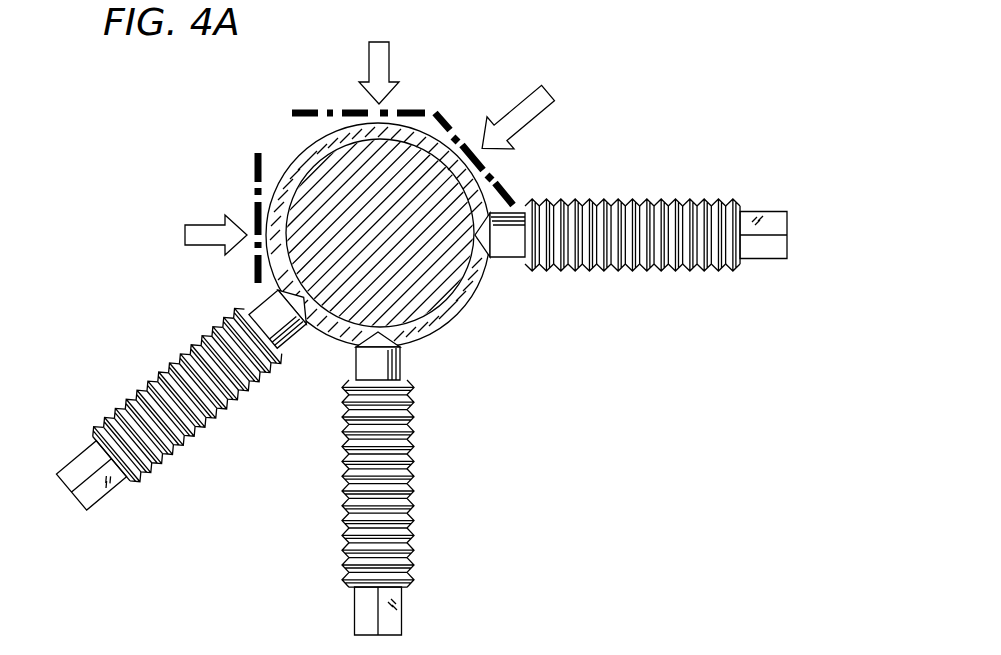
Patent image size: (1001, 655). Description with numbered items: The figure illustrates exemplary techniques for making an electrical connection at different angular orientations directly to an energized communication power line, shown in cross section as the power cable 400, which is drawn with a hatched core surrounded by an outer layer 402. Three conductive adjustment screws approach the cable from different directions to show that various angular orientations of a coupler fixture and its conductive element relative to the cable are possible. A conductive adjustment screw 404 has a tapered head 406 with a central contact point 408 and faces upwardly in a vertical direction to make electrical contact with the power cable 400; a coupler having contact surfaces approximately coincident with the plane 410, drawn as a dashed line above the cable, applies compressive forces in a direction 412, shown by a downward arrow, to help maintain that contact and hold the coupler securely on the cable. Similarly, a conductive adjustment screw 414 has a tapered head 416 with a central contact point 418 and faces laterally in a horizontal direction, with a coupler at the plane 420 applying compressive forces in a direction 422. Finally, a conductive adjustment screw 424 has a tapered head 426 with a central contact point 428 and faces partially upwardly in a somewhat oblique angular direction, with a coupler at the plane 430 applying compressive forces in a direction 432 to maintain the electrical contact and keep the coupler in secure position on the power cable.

The power cable 400 is at (327, 178).
The outer shell layer 402 is at (442, 328).
The conductive adjustment screw 404 is at (418, 510).
The tapered head 406 is at (368, 358).
The central contact point 408 is at (382, 333).
The plane 410 is at (338, 108).
The direction 412 is at (388, 62).
The conductive adjustment screw 414 is at (707, 209).
The tapered head 416 is at (500, 258).
The central contact point 418 is at (475, 234).
The plane 420 is at (255, 175).
The direction 422 is at (185, 233).
The conductive adjustment screw 424 is at (122, 403).
The tapered head 426 is at (285, 298).
The central contact point 428 is at (305, 292).
The plane 430 is at (452, 128).
The direction 432 is at (532, 108).